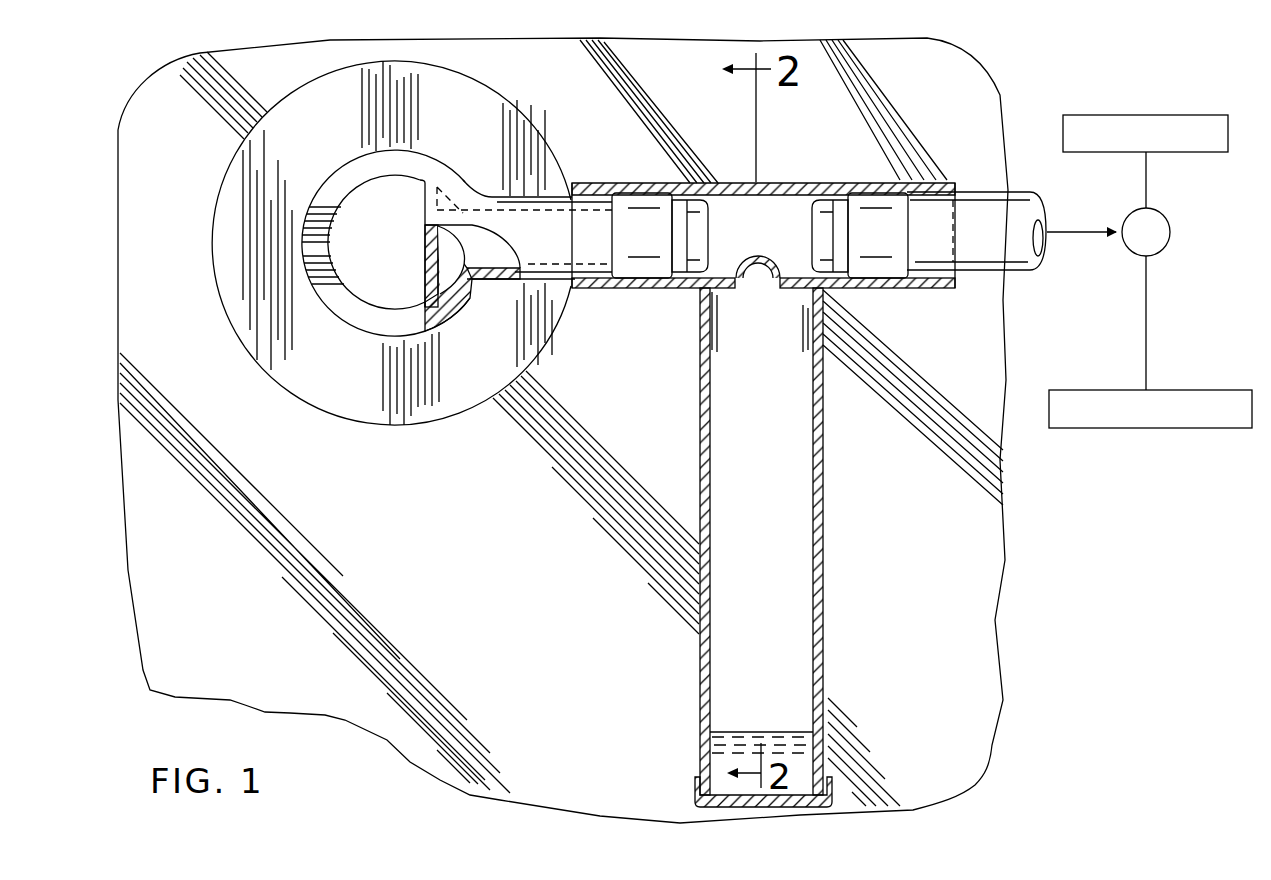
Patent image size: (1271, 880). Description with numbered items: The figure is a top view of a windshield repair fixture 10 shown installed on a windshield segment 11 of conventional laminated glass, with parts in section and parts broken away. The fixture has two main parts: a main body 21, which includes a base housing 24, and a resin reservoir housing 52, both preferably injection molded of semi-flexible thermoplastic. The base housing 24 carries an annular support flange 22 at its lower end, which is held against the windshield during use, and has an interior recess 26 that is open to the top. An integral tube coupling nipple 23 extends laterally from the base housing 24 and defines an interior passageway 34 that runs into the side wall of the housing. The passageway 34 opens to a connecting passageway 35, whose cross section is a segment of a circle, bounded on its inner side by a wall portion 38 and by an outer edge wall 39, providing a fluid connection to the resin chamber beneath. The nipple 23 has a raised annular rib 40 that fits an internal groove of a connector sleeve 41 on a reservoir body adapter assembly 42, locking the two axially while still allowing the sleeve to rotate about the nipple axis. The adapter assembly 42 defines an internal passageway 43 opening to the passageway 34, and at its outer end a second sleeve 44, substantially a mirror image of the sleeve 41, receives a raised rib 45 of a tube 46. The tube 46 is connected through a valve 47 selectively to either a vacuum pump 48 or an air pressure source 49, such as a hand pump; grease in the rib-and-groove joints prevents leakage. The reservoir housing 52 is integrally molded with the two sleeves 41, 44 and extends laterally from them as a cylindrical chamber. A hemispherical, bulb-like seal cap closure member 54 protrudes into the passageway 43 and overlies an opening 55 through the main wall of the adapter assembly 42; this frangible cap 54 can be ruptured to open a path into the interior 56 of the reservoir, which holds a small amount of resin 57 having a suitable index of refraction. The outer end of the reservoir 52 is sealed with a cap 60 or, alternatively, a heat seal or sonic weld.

The repair fixture 10 is at (774, 449).
The windshield segment 11 is at (988, 622).
The main body 21 is at (323, 304).
The annular support flange 22 is at (405, 405).
The tube coupling nipple 23 is at (548, 192).
The base housing 24 is at (337, 193).
The interior recess 26 is at (395, 200).
The interior passageway 34 is at (493, 256).
The connecting passageway 35 is at (452, 228).
The wall portion 38 is at (427, 270).
The outer edge wall 39 is at (468, 312).
The raised annular rib 40 is at (640, 203).
The connector sleeve 41 is at (611, 290).
The reservoir body adapter assembly 42 is at (691, 180).
The internal passageway 43 is at (806, 183).
The second sleeve 44 is at (889, 289).
The raised rib 45 is at (887, 207).
The tube 46 is at (1010, 215).
The valve 47 is at (1172, 222).
The vacuum pump 48 is at (1213, 112).
The air pressure source 49 is at (1192, 388).
The resin reservoir housing 52 is at (698, 667).
The seal cap closure member 54 is at (764, 257).
The opening 55 is at (758, 276).
The reservoir interior 56 is at (790, 486).
The resin 57 is at (778, 722).
The cap 60 is at (832, 782).